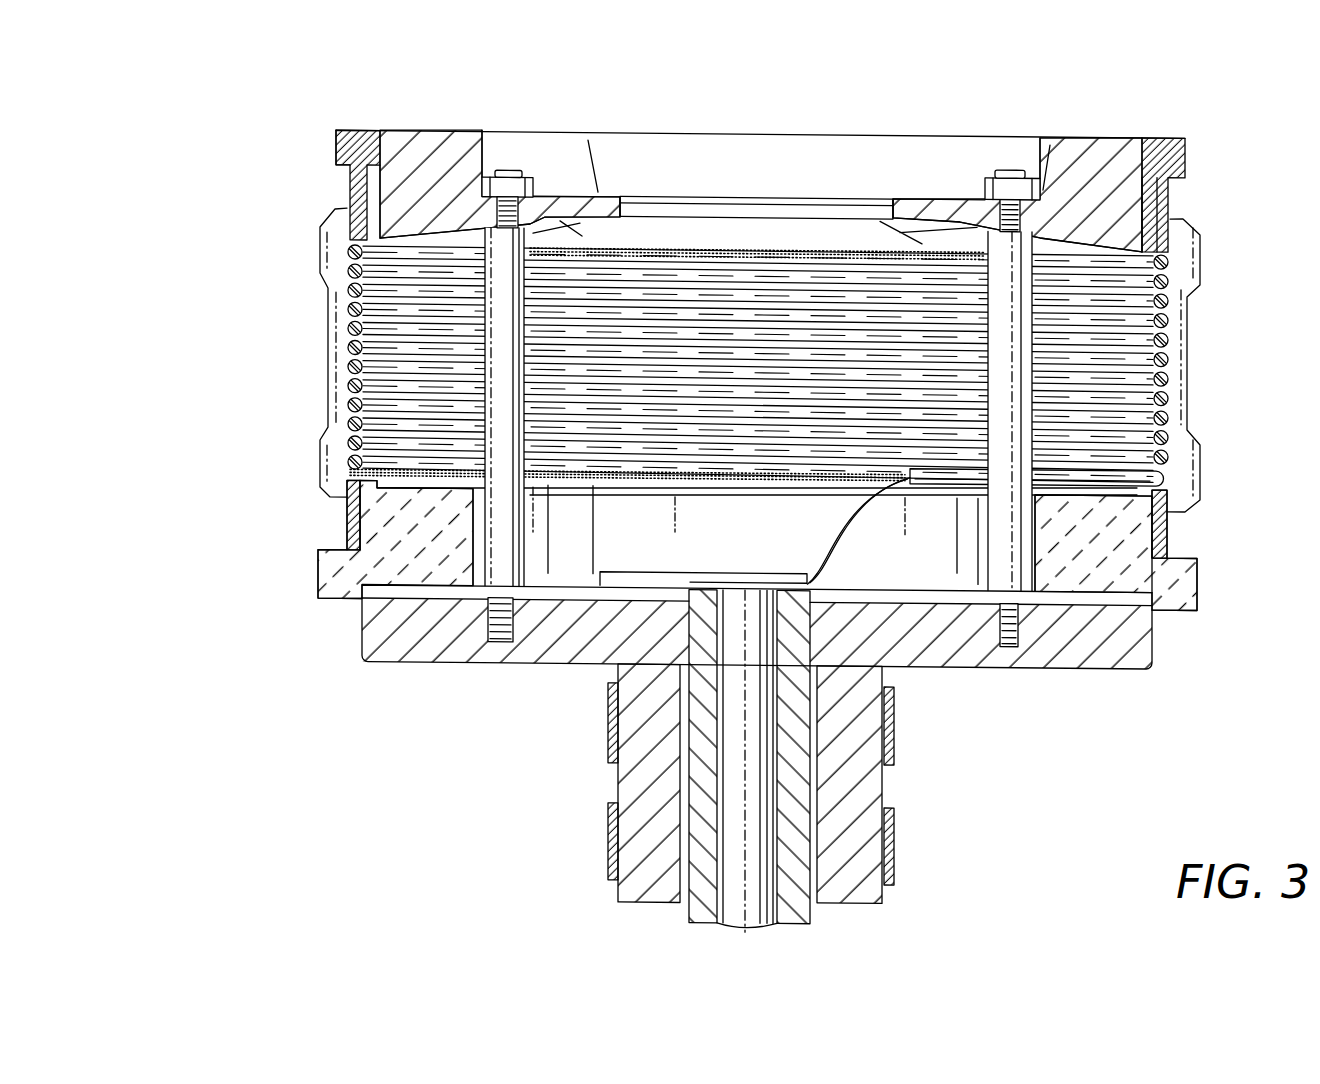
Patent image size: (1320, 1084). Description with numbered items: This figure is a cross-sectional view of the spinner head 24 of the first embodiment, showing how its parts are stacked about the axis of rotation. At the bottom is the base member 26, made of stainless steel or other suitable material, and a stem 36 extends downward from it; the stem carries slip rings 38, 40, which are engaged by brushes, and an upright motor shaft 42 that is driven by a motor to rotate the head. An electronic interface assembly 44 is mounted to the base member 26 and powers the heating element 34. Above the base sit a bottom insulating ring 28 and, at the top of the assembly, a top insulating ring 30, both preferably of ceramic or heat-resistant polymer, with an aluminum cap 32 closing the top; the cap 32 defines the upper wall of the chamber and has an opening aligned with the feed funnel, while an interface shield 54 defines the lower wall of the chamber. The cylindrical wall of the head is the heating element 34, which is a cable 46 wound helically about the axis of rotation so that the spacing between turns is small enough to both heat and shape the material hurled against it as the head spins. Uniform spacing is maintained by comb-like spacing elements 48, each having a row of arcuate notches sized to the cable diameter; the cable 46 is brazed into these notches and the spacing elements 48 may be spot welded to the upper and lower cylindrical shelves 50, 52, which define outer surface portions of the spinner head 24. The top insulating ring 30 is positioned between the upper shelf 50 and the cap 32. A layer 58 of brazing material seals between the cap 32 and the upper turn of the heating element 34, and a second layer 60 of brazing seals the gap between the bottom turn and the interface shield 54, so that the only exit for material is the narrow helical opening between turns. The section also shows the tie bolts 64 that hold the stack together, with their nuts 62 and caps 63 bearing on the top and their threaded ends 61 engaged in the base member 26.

The spinner head 24 is at (268, 224).
The base member 26 is at (377, 644).
The bottom insulating ring 28 is at (318, 570).
The top insulating ring 30 is at (335, 154).
The aluminum cap 32 is at (372, 124).
The heating element 34 is at (333, 357).
The stem 36 is at (730, 761).
The slip ring 38 is at (608, 712).
The slip ring 40 is at (608, 845).
The upright motor shaft 42 is at (760, 776).
The electronic interface assembly 44 is at (676, 571).
The cable 46 is at (1190, 389).
The comb-like spacing element 48 is at (1185, 263).
The upper cylindrical shelf 50 is at (1170, 179).
The lower cylindrical shelf 52 is at (1167, 529).
The interface shield 54 is at (920, 489).
The layer of brazing material 58 is at (800, 189).
The second layer of brazing 60 is at (768, 481).
The threaded bolt end 61 is at (500, 643).
The nut 62 is at (512, 163).
The bolt cap 63 is at (487, 172).
The tie bolt 64 is at (508, 287).